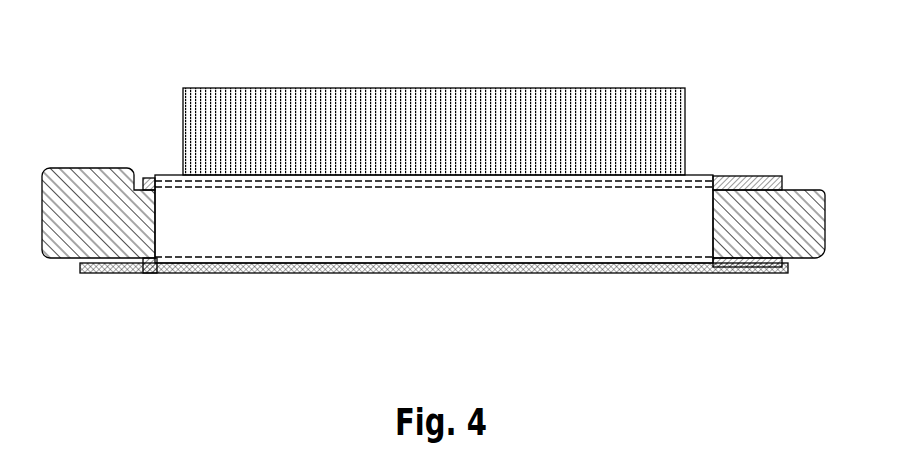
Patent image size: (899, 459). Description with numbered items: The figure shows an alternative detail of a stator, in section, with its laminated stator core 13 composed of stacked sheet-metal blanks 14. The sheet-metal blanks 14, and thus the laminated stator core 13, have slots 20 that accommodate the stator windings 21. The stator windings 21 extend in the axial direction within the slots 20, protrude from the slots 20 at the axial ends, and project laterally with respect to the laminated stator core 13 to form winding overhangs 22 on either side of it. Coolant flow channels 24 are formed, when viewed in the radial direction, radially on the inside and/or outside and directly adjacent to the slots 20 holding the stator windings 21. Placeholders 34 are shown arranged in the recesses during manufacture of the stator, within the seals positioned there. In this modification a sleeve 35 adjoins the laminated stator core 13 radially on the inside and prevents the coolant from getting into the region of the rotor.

The laminated stator core 13 is at (434, 94).
The sheet-metal blanks 14 is at (406, 110).
The slots 20 is at (724, 223).
The stator windings 21 is at (148, 213).
The winding overhangs 22 is at (87, 200).
The coolant flow channels 24 is at (723, 179).
The placeholder 34 is at (146, 180).
The sleeve 35 is at (488, 273).